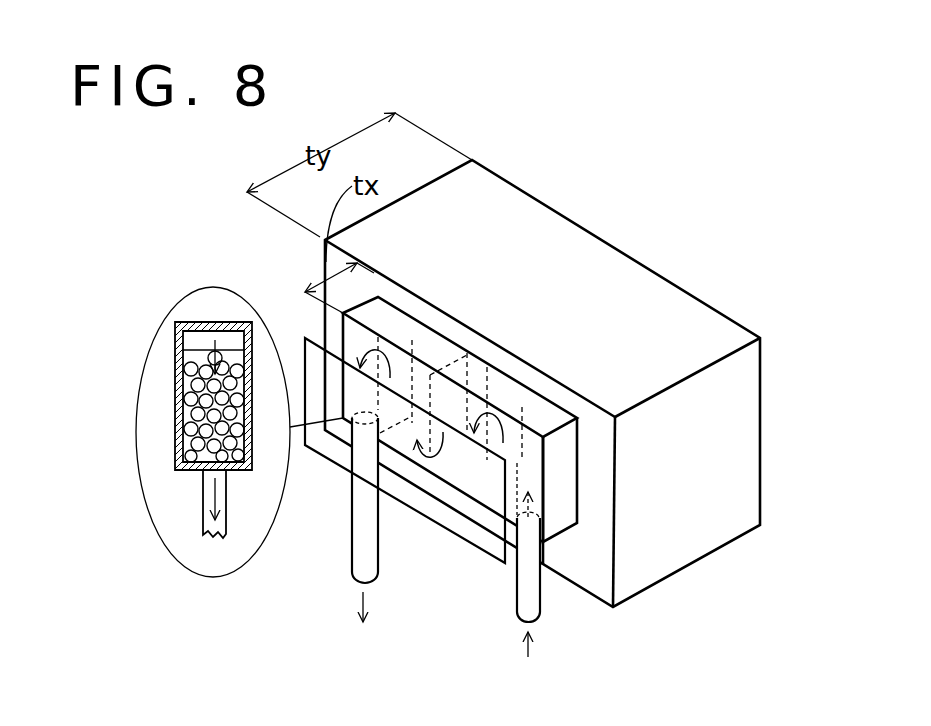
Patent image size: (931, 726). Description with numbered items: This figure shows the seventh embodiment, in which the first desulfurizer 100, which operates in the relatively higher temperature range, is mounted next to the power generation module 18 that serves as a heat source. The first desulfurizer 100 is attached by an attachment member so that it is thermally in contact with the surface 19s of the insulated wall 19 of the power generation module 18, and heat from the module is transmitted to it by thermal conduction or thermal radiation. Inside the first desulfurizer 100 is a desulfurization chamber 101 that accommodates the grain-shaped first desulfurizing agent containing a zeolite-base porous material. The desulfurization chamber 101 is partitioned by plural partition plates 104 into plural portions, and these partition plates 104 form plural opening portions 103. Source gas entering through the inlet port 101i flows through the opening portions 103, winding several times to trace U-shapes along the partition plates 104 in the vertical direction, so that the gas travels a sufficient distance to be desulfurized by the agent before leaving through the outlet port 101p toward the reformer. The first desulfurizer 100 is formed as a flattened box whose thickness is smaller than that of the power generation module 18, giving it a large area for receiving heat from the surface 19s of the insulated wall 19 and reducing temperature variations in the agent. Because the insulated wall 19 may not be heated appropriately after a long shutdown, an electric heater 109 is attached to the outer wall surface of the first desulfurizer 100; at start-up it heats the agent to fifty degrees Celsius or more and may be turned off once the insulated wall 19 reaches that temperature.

The power generation module 18 is at (718, 530).
The insulated wall 19 is at (690, 545).
The surface of the insulated wall 19s is at (588, 578).
The first desulfurizer 100 is at (387, 325).
The desulfurization chamber 101 is at (493, 390).
The outlet port 101p is at (352, 580).
The inlet port 101i is at (513, 624).
The opening portions 103 is at (414, 312).
The partition plates 104 is at (385, 335).
The electric heater 109 is at (305, 338).